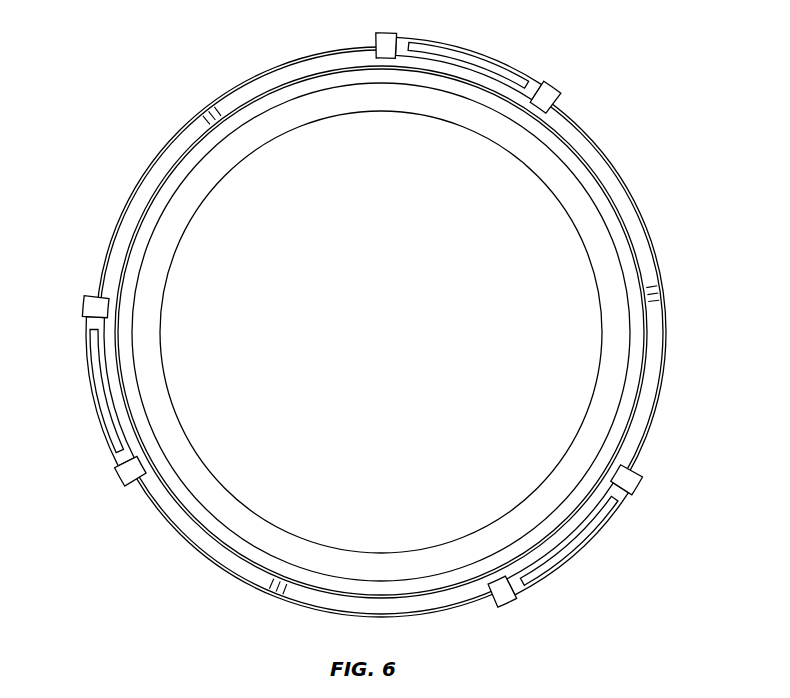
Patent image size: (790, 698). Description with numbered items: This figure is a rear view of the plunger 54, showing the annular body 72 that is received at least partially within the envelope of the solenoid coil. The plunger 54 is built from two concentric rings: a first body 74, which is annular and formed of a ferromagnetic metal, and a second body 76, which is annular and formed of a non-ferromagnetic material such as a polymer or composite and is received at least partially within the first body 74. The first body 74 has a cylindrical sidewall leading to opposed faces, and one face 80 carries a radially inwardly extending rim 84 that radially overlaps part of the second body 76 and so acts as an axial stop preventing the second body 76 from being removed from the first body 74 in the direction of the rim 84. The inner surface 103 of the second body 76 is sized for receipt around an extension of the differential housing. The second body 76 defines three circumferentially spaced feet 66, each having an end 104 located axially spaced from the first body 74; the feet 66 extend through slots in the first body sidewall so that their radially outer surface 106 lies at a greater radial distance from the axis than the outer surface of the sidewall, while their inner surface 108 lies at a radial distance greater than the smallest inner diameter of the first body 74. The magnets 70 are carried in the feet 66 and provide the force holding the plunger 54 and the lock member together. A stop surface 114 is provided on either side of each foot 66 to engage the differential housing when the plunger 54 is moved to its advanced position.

The plunger 54 is at (643, 123).
The feet 66 is at (549, 90).
The magnets 70 is at (500, 73).
The annular body 72 is at (670, 330).
The first body 74 is at (657, 256).
The second body 76 is at (243, 508).
The face 80 is at (663, 398).
The rim 84 is at (600, 152).
The inner surface 103 is at (163, 331).
The end 104 is at (401, 38).
The radially outer surface 106 is at (440, 50).
The inner surface 108 is at (436, 70).
The stop surface 114 is at (383, 38).